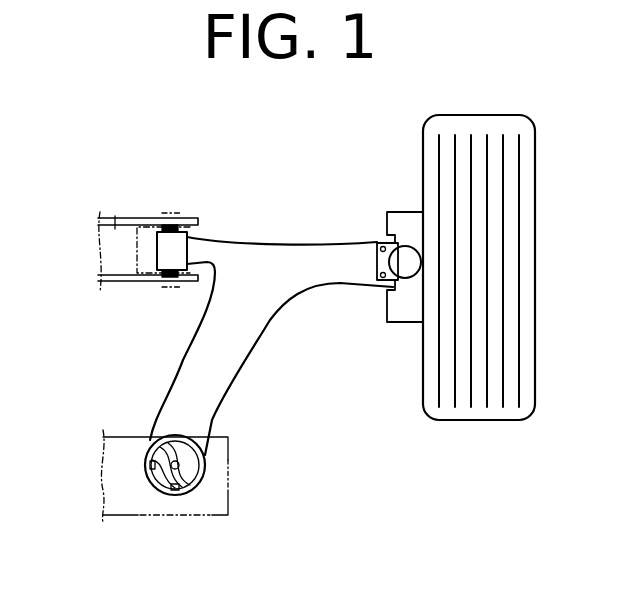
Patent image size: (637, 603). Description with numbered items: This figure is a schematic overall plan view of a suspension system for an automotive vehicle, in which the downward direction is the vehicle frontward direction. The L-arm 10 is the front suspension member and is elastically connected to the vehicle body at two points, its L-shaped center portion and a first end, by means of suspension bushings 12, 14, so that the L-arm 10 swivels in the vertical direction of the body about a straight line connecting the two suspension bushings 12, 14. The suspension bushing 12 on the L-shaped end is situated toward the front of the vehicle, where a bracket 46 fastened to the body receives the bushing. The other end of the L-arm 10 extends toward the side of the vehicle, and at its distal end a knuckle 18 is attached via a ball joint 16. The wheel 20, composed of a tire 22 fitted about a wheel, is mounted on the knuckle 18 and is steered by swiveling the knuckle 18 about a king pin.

The L-arm 10 is at (223, 355).
The suspension bushing 12 is at (212, 472).
The suspension bushing 14 is at (172, 223).
The ball joint 16 is at (398, 257).
The knuckle 18 is at (407, 312).
The wheel 20 is at (463, 297).
The tire 22 is at (443, 170).
The bracket 46 is at (112, 214).